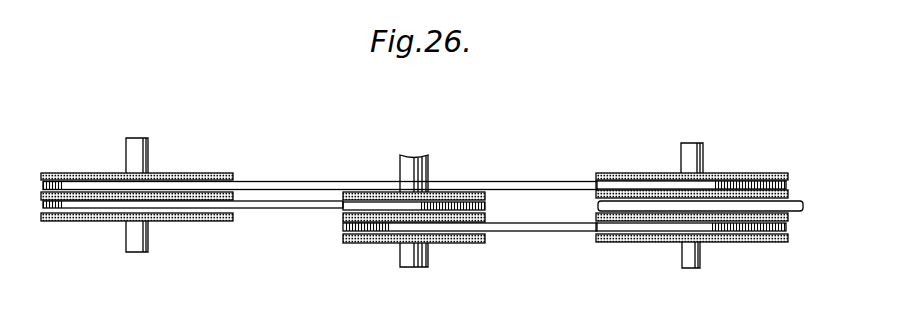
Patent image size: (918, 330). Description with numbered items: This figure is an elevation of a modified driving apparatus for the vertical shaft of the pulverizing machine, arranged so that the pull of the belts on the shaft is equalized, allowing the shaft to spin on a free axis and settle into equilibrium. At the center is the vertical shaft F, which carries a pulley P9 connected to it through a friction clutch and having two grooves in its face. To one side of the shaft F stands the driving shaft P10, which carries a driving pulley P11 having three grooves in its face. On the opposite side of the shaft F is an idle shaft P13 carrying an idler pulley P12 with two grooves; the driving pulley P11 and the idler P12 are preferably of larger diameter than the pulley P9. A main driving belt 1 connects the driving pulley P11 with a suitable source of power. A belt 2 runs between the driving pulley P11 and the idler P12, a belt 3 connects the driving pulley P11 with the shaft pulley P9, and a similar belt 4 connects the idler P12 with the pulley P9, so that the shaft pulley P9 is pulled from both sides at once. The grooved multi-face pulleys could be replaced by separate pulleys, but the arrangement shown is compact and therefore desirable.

The main driving belt 1 is at (803, 212).
The belt 2 is at (521, 180).
The belt 3 is at (542, 226).
The belt 4 is at (303, 208).
The vertical shaft F is at (425, 157).
The pulley P9 is at (380, 243).
The driving shaft P10 is at (682, 148).
The driving pulley P11 is at (664, 240).
The idler pulley P12 is at (212, 172).
The idle shaft P13 is at (118, 152).